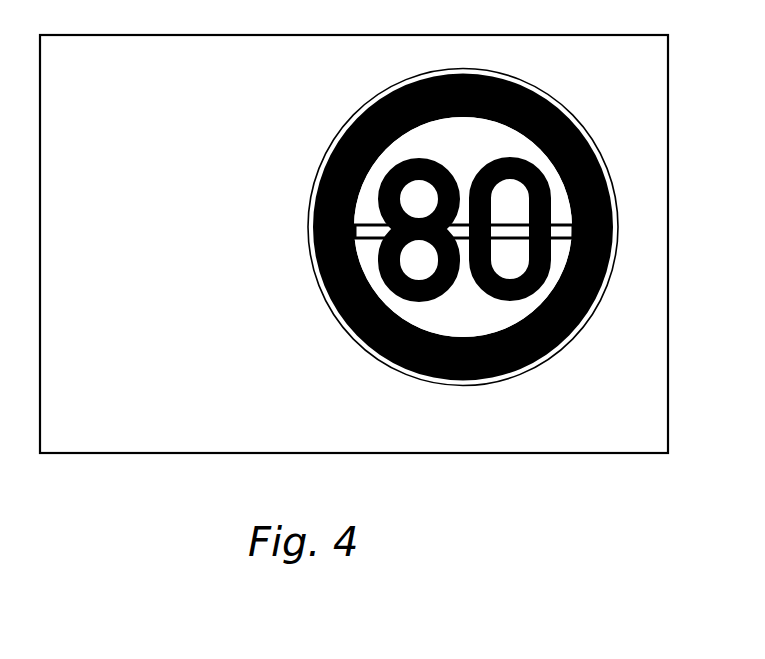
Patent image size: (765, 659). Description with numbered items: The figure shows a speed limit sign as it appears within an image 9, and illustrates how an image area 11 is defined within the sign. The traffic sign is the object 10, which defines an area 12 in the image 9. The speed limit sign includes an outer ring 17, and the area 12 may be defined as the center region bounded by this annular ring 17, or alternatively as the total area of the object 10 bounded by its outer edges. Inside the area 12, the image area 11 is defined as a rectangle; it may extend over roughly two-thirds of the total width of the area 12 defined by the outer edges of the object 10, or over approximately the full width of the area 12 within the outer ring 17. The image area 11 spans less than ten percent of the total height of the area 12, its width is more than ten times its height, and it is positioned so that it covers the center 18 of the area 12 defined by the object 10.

The image 9 is at (668, 297).
The object 10 is at (459, 241).
The image area 11 is at (327, 293).
The area 12 is at (410, 146).
The outer ring 17 is at (607, 181).
The center 18 is at (467, 240).